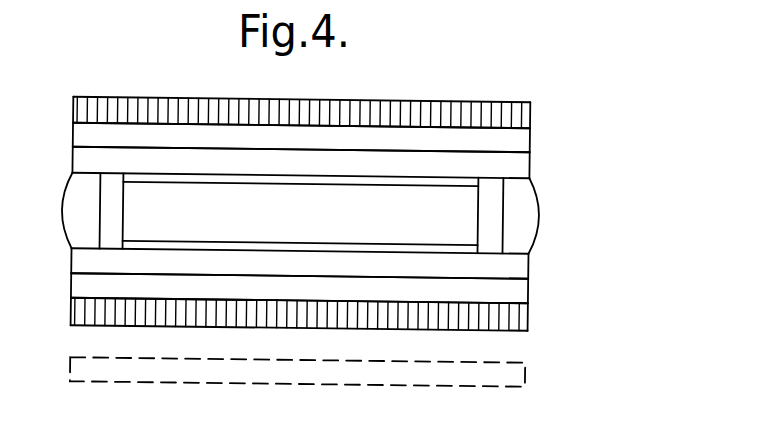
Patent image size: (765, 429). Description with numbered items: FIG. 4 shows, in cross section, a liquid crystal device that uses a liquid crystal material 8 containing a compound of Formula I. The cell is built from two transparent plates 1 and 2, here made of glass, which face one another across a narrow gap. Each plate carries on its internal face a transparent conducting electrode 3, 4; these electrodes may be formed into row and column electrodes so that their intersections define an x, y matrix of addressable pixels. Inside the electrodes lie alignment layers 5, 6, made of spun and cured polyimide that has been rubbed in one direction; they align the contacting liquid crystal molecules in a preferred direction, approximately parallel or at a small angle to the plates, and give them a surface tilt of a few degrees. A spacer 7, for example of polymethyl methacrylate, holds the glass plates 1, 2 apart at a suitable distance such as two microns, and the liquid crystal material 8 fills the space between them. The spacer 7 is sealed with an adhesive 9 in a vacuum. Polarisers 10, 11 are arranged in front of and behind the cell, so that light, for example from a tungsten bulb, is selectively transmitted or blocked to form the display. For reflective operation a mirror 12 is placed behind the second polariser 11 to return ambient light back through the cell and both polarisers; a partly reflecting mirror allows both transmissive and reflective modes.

The transparent plate 1 is at (136, 135).
The transparent plate 2 is at (154, 295).
The transparent conducting electrode 3 is at (341, 162).
The transparent conducting electrode 4 is at (409, 266).
The alignment layer 5 is at (435, 178).
The alignment layer 6 is at (472, 246).
The spacer 7 is at (495, 207).
The liquid crystal material 8 is at (137, 202).
The adhesive 9 is at (78, 235).
The polariser 10 is at (89, 116).
The polariser 11 is at (101, 320).
The mirror 12 is at (270, 378).